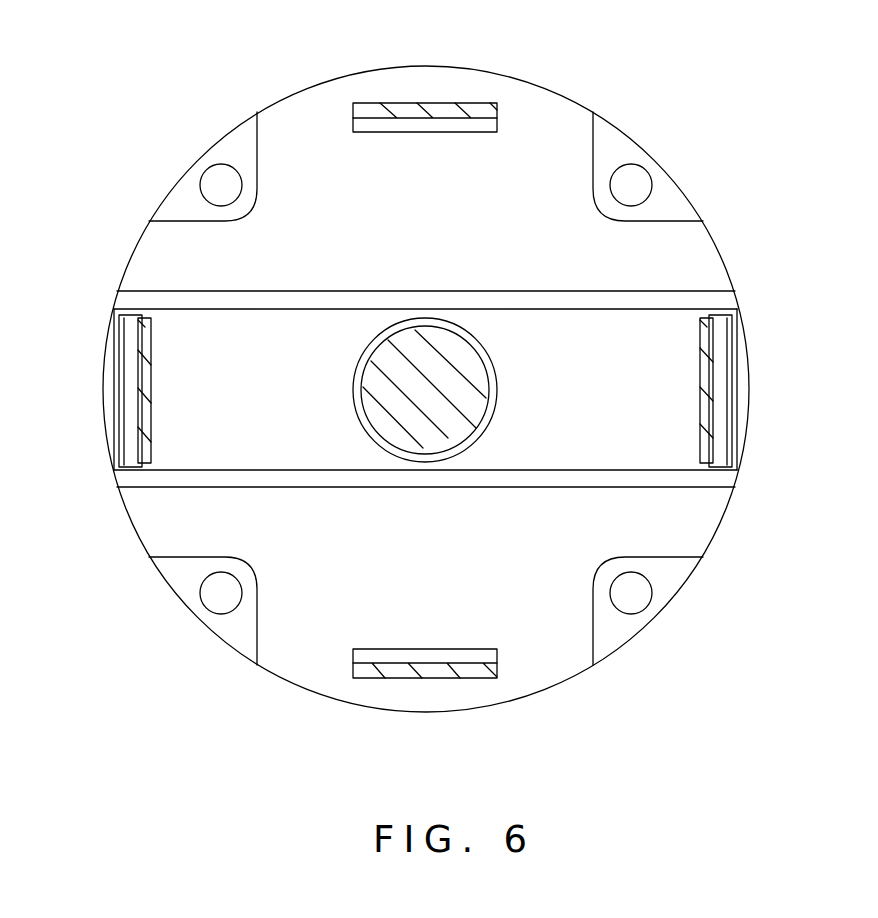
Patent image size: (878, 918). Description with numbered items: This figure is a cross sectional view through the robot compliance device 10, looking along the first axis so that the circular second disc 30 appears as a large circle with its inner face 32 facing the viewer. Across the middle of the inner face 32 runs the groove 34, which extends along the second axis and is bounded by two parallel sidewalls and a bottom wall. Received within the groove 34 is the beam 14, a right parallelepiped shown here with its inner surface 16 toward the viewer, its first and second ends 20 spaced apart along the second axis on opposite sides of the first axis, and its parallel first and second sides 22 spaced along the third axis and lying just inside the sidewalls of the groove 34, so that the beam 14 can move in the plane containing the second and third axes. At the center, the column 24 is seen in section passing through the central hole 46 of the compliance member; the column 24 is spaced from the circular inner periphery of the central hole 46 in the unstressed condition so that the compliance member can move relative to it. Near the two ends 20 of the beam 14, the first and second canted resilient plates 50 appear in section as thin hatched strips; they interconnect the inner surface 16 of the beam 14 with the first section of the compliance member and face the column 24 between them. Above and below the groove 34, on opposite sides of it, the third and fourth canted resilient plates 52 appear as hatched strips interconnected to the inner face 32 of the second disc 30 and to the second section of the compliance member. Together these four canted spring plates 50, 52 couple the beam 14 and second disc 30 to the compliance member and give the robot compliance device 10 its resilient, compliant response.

The robot compliance device 10 is at (268, 84).
The beam 14 is at (190, 340).
The inner surface 16 is at (608, 438).
The first and second ends 20 is at (152, 470).
The first and second sides 22 is at (688, 300).
The column 24 is at (452, 422).
The second disc 30 is at (165, 253).
The inner face 32 is at (568, 193).
The groove 34 is at (210, 484).
The central hole 46 is at (393, 448).
The first and second canted resilient plates 50 is at (135, 413).
The third and fourth canted resilient plates 52 is at (473, 103).